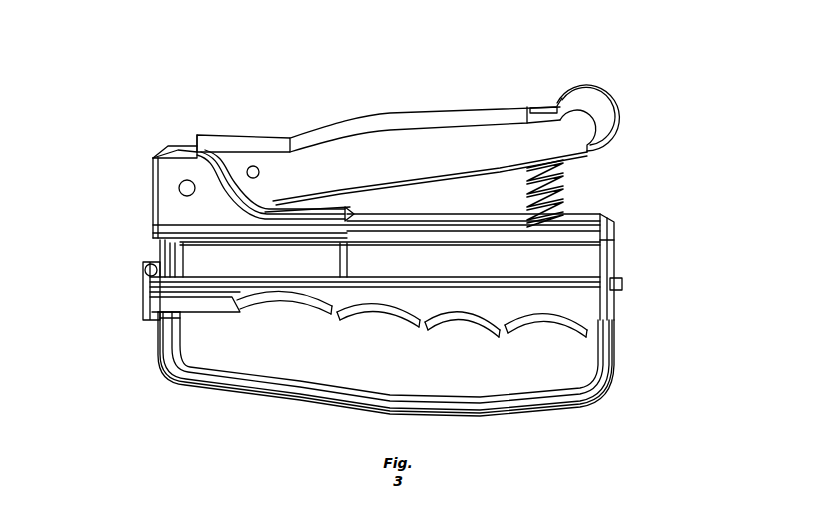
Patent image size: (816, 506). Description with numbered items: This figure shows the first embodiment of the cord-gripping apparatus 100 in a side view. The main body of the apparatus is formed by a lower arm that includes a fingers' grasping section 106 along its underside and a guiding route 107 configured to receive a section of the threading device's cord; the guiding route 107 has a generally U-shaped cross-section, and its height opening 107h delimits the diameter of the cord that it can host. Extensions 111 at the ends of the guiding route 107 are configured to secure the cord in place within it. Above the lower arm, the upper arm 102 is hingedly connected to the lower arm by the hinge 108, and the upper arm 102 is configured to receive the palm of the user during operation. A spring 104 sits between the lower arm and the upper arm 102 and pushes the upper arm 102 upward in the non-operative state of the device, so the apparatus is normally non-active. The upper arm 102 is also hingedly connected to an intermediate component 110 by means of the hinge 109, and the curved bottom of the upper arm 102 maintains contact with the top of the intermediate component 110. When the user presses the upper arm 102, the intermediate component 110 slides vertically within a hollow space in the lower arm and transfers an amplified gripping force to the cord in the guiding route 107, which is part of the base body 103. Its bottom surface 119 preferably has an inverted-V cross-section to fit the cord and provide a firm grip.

The clamp assembly 100 is at (644, 121).
The upper arm 102 is at (430, 114).
The base 103 is at (612, 257).
The spring 104 is at (565, 182).
The fingers' grasping section 106 is at (437, 323).
The guiding route 107 is at (157, 252).
The slot height 107h is at (155, 277).
The hinge 108 is at (178, 186).
The hinge 109 is at (262, 168).
The intermediate component 110 is at (300, 208).
The extensions 111 is at (150, 276).
The bottom surface 119 is at (293, 250).